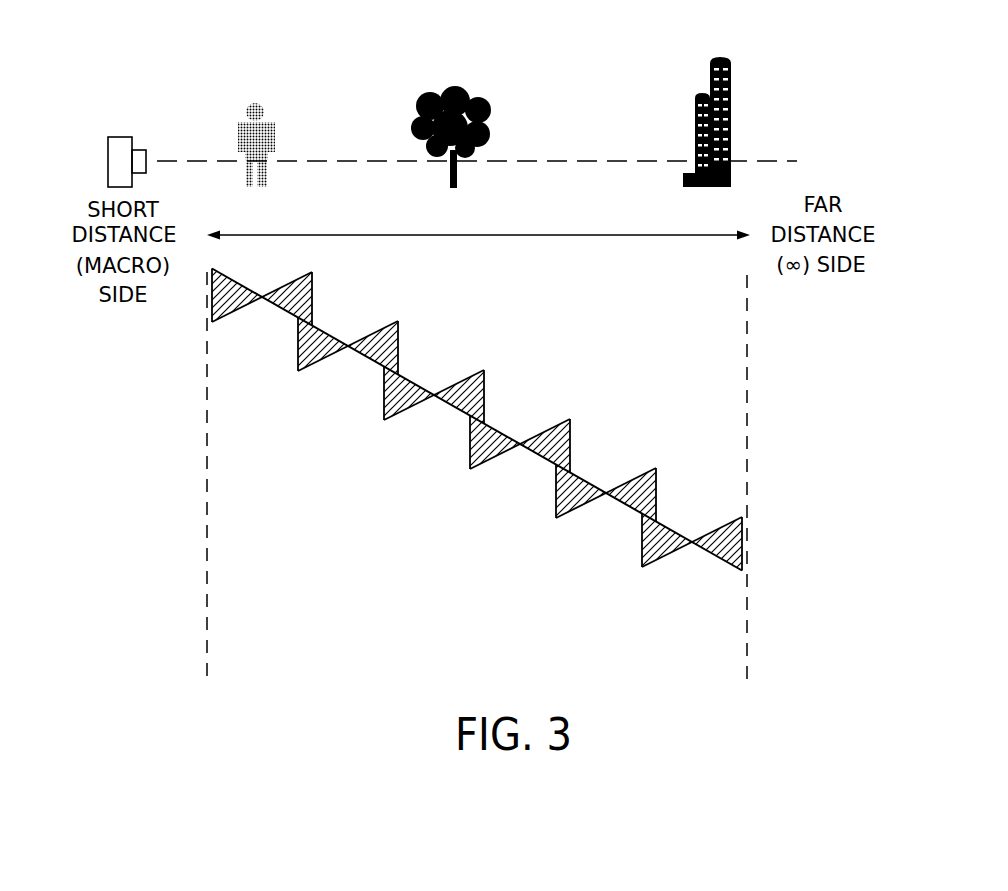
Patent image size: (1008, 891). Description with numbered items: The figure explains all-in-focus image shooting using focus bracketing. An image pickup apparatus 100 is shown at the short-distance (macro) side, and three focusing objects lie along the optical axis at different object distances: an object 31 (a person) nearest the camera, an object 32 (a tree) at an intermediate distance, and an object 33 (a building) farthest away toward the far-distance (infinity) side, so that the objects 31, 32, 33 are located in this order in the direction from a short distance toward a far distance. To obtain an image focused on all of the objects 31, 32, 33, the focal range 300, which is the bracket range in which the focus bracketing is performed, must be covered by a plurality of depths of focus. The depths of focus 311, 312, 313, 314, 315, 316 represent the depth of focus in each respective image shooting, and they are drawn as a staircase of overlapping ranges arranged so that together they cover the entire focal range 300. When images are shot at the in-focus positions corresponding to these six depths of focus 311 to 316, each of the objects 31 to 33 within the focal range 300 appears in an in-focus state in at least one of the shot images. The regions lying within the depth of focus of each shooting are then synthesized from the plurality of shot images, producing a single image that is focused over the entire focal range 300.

The image pickup apparatus 100 is at (133, 137).
The object 31 is at (262, 100).
The object 32 is at (482, 83).
The object 33 is at (732, 54).
The focal range 300 is at (603, 237).
The depth of focus 311 is at (240, 308).
The depth of focus 312 is at (333, 355).
The depth of focus 313 is at (418, 402).
The depth of focus 314 is at (505, 453).
The depth of focus 315 is at (595, 502).
The depth of focus 316 is at (677, 553).